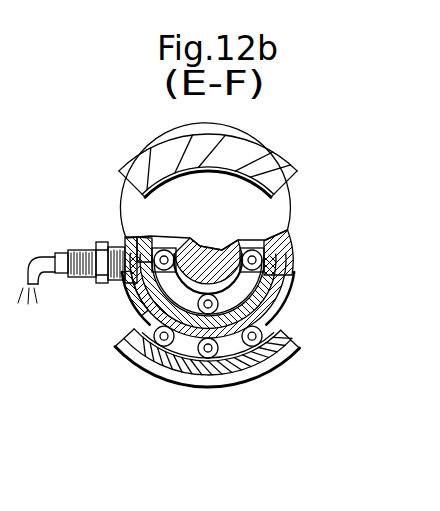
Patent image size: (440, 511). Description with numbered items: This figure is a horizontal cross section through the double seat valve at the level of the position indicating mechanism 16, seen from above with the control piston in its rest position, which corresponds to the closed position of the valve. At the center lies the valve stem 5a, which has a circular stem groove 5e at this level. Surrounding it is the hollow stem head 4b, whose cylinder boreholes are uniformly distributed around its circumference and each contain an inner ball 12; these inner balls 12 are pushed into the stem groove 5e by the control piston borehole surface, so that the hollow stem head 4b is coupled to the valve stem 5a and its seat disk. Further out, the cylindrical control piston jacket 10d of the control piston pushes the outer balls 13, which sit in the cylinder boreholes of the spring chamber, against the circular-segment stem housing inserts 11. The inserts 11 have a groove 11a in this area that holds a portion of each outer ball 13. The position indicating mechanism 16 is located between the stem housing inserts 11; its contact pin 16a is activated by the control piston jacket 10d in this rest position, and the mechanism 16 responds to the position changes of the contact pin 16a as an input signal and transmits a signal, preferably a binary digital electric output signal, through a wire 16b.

The stem housing insert 11 is at (272, 175).
The groove 11a is at (140, 338).
The control piston jacket 10d is at (130, 299).
The inner ball 12 is at (268, 305).
The outer ball 13 is at (267, 337).
The stem groove 5e is at (242, 283).
The valve stem 5a is at (220, 252).
The hollow stem head 4b is at (258, 236).
The contact pin 16a is at (126, 239).
The position indicating mechanism 16 is at (76, 277).
The wire 16b is at (37, 255).